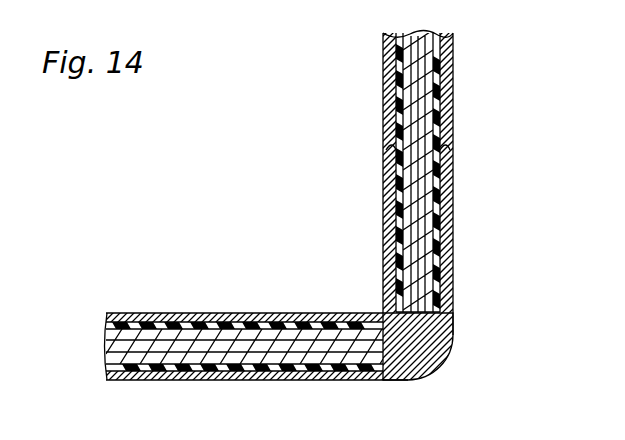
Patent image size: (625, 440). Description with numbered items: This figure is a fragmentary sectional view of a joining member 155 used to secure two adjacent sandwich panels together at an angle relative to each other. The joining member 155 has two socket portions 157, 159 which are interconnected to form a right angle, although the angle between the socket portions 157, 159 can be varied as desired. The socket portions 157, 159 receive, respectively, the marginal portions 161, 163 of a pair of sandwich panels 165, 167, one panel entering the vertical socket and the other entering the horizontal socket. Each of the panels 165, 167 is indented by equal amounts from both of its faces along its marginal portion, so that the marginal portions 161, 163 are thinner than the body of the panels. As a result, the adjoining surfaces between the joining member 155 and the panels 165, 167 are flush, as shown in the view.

The joining member 155 is at (447, 343).
The socket portion 157 is at (448, 268).
The socket portion 159 is at (334, 374).
The marginal portion 161 is at (422, 256).
The marginal portion 163 is at (312, 345).
The sandwich panel 165 is at (430, 97).
The sandwich panel 167 is at (110, 355).